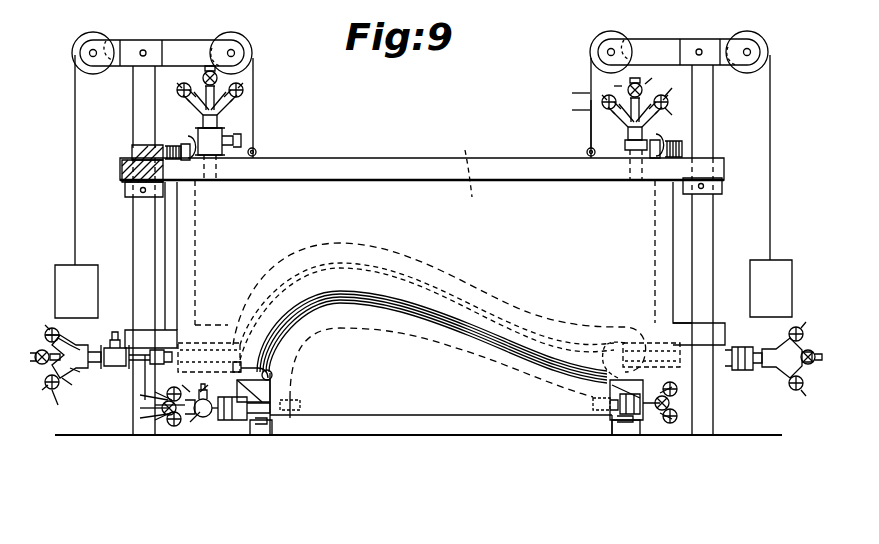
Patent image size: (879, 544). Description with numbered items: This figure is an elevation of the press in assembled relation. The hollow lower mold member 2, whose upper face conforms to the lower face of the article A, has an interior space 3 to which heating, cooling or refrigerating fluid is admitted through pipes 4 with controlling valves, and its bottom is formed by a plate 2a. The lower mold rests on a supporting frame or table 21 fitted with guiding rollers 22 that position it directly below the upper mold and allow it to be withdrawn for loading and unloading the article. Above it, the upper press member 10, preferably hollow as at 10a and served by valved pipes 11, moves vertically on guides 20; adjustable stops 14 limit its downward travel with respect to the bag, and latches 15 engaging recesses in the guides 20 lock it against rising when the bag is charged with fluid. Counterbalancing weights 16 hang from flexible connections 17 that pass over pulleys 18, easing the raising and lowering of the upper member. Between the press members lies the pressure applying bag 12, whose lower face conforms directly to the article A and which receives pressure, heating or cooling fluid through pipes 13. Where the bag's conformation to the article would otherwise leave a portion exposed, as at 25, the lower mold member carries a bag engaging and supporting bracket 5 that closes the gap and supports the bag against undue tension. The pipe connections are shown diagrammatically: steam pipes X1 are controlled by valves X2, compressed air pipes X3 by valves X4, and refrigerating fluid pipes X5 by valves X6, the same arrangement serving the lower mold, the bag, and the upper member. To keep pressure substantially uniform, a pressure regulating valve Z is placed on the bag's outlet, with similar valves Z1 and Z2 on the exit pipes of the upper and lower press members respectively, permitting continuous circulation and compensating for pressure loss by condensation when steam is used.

The lower mold member 2 is at (386, 328).
The plate 2a is at (359, 435).
The hollow interior space 3 is at (435, 352).
The pipes 4 is at (250, 410).
The bag engaging and supporting bracket 5 is at (285, 393).
The upper press member 10 is at (325, 195).
The hollow interior of upper press member 10a is at (457, 163).
The pipes 11 is at (633, 150).
The pressure applying bag 12 is at (372, 274).
The pipes 13 is at (180, 345).
The stops 14 is at (125, 191).
The latches 15 is at (145, 152).
The weights 16 is at (84, 275).
The flexible connections 17 is at (75, 153).
The pulleys 18 is at (92, 34).
The guides 20 is at (135, 211).
The supporting frame or table 21 is at (552, 437).
The guiding rollers 22 is at (263, 437).
The exposed portion of the bag 25 is at (280, 382).
The article A is at (407, 313).
The pressure regulating valve Z is at (115, 332).
The pressure regulating valve Z1 is at (214, 140).
The pressure regulating valve Z2 is at (210, 401).
The steam supply pipes X1 is at (308, 237).
The steam control valves X2 is at (324, 246).
The compressed air supply pipes X3 is at (346, 237).
The compressed air control valves X4 is at (367, 239).
The refrigerating fluid supply pipes X5 is at (372, 251).
The refrigerating fluid control valves X6 is at (367, 270).